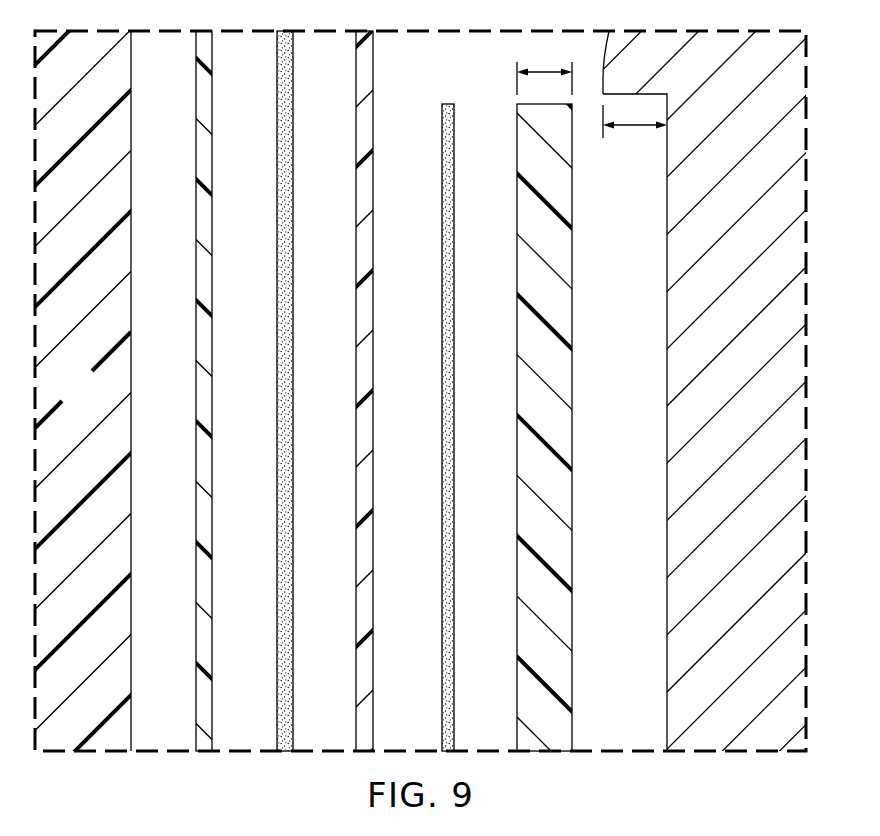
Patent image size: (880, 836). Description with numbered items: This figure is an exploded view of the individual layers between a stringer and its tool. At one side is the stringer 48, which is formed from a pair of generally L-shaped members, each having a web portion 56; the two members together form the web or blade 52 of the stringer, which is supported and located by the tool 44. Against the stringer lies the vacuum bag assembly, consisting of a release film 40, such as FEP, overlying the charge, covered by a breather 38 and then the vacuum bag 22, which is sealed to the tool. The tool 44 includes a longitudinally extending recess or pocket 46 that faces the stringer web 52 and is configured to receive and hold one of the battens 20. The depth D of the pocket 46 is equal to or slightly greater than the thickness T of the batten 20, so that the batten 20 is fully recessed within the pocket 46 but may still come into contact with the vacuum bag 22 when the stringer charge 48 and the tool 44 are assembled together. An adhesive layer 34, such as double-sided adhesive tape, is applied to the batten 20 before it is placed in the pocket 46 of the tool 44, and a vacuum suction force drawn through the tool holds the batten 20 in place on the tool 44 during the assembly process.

The batten 20 is at (562, 252).
The vacuum bag 22 is at (363, 304).
The adhesive layer 34 is at (446, 458).
The breather 38 is at (285, 152).
The release film 40 is at (203, 150).
The tool 44 is at (675, 542).
The pocket 46 is at (598, 377).
The stringer 48 is at (99, 404).
The web 52 is at (145, 609).
The web portion 56 is at (122, 247).